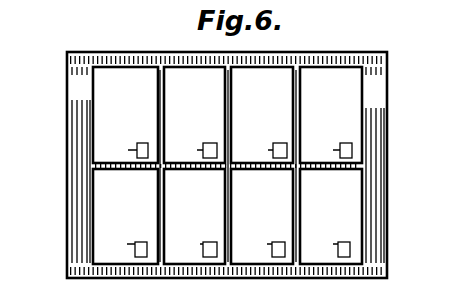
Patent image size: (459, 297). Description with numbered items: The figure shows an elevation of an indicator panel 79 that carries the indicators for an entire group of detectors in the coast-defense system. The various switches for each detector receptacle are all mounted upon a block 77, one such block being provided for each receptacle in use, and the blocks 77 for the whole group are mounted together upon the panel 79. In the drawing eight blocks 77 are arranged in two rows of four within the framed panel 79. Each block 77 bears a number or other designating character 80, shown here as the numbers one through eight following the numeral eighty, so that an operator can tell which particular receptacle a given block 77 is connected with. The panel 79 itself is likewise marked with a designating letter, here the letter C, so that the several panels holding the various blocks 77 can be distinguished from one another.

The block 77 is at (103, 112).
The panel 79 is at (389, 162).
The designating character 80 is at (229, 198).